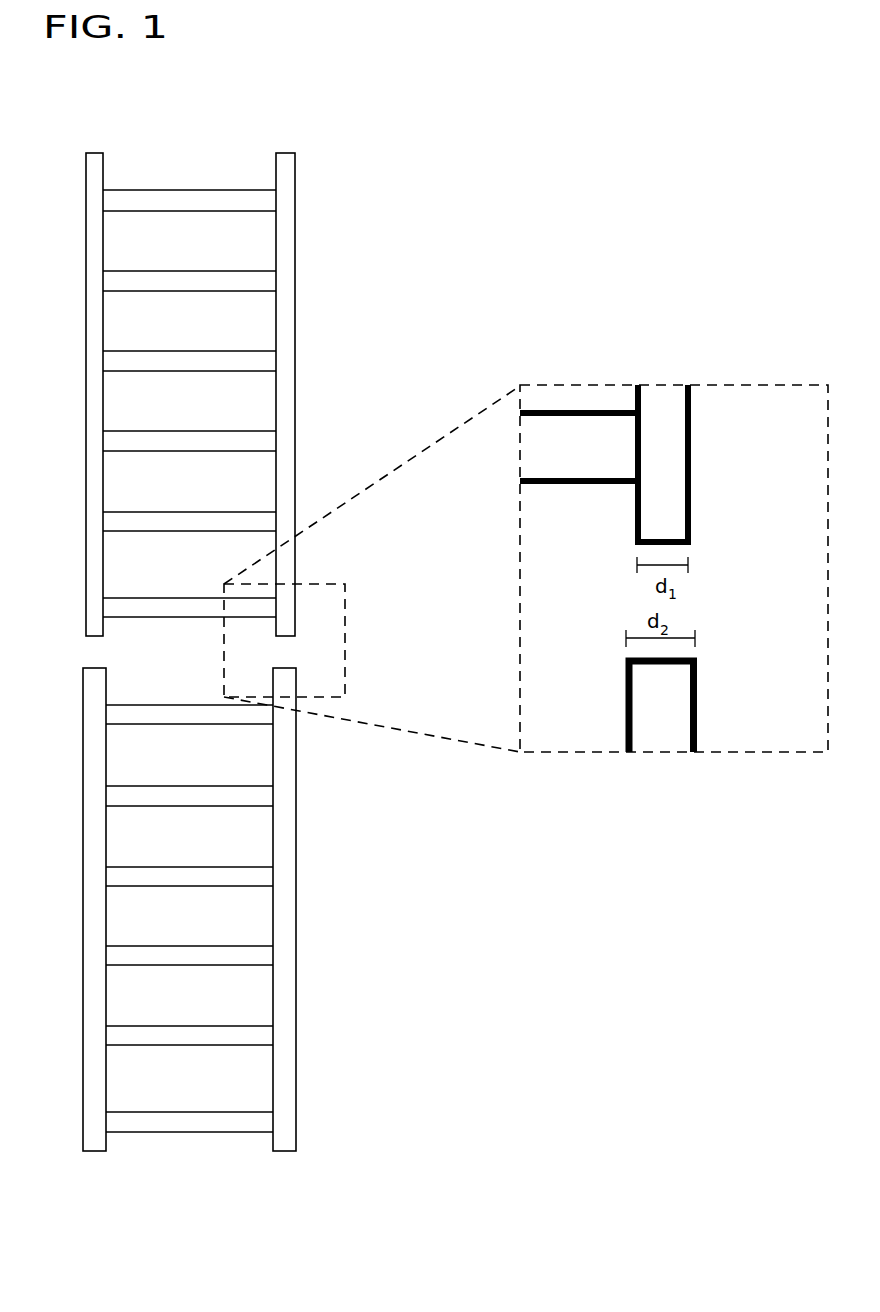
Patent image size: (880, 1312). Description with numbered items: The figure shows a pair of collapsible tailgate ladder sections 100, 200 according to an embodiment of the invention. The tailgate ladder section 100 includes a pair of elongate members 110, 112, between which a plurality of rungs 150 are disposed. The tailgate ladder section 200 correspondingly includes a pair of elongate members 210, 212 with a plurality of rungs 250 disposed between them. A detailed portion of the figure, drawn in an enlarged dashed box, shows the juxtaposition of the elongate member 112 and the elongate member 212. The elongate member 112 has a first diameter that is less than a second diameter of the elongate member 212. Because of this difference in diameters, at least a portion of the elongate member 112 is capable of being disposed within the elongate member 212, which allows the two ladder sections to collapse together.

The tailgate ladder section 100 is at (441, 353).
The elongate member 110 is at (97, 178).
The elongate member 112 is at (283, 182).
The rungs 150 is at (163, 202).
The tailgate ladder section 200 is at (438, 932).
The elongate member 210 is at (92, 1130).
The elongate member 212 is at (282, 1137).
The rungs 250 is at (192, 717).